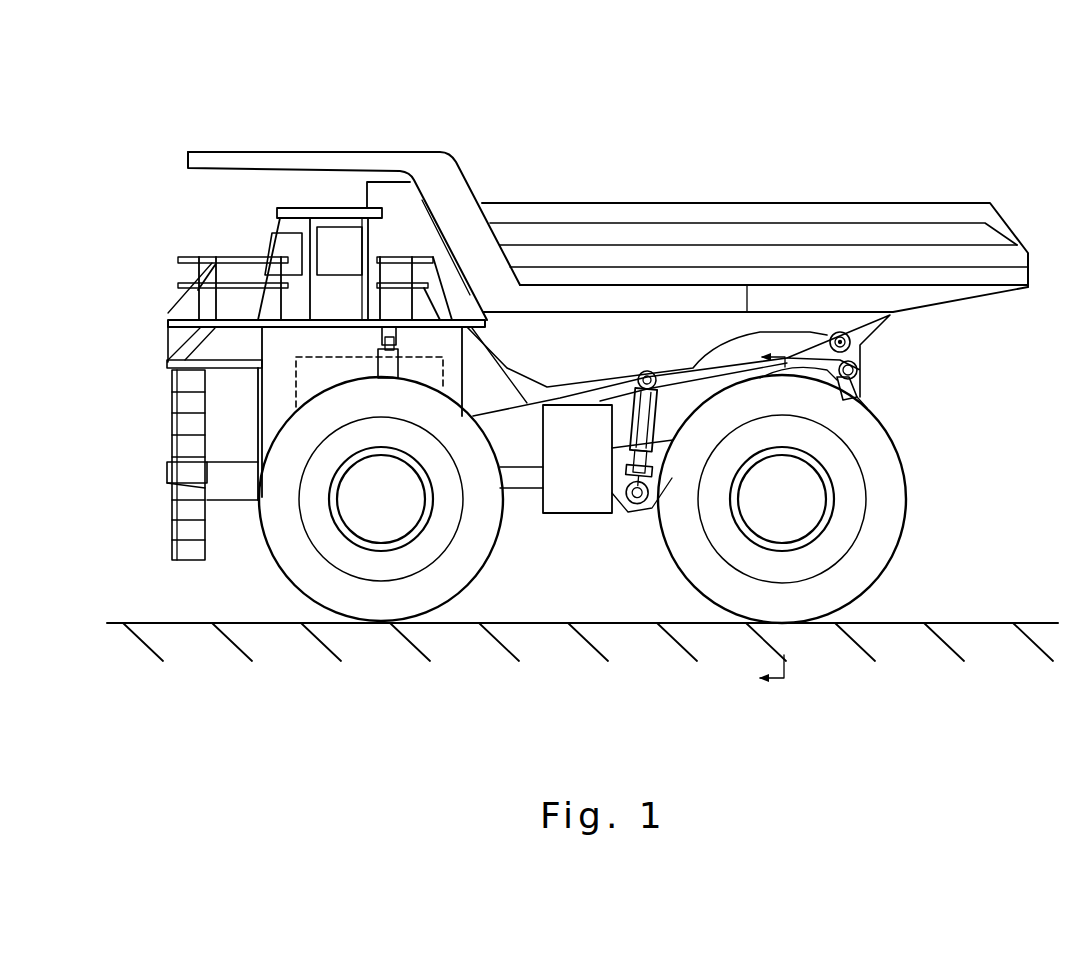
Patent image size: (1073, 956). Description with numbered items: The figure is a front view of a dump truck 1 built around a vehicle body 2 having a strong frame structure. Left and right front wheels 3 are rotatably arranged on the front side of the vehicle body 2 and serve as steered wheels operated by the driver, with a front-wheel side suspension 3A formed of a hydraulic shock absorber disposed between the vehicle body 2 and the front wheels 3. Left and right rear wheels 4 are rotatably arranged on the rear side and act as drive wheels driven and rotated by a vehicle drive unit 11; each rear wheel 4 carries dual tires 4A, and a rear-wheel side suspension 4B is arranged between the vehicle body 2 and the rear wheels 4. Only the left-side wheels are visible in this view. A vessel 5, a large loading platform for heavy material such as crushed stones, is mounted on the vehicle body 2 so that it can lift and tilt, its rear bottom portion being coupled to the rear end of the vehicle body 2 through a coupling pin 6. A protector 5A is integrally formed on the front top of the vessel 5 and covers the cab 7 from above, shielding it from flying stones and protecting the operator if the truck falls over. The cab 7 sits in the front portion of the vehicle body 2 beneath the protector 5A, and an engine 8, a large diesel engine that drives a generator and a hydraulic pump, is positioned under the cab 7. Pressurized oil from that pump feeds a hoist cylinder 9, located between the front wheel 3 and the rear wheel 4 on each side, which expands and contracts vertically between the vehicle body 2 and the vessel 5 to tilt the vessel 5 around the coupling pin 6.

The dump truck 1 is at (591, 168).
The vehicle body 2 is at (523, 440).
The front wheel 3 is at (382, 603).
The front-wheel side suspension 3A is at (388, 372).
The rear wheel 4 is at (808, 593).
The tire 4A is at (873, 553).
The rear-wheel side suspension 4B is at (860, 393).
The vessel 5 is at (764, 232).
The protector 5A is at (312, 160).
The coupling pin 6 is at (852, 347).
The cab 7 is at (288, 244).
The engine 8 is at (317, 373).
The hoist cylinder 9 is at (637, 510).
The vehicle drive unit 11 is at (838, 482).